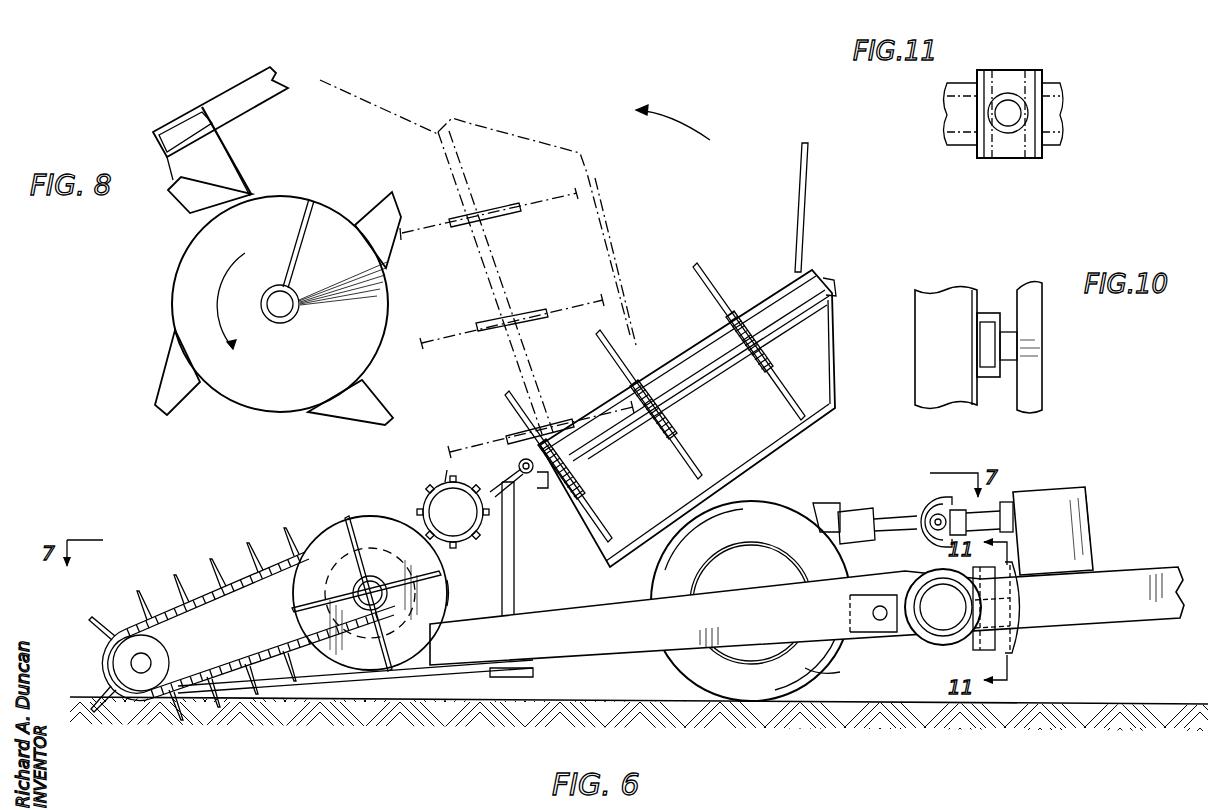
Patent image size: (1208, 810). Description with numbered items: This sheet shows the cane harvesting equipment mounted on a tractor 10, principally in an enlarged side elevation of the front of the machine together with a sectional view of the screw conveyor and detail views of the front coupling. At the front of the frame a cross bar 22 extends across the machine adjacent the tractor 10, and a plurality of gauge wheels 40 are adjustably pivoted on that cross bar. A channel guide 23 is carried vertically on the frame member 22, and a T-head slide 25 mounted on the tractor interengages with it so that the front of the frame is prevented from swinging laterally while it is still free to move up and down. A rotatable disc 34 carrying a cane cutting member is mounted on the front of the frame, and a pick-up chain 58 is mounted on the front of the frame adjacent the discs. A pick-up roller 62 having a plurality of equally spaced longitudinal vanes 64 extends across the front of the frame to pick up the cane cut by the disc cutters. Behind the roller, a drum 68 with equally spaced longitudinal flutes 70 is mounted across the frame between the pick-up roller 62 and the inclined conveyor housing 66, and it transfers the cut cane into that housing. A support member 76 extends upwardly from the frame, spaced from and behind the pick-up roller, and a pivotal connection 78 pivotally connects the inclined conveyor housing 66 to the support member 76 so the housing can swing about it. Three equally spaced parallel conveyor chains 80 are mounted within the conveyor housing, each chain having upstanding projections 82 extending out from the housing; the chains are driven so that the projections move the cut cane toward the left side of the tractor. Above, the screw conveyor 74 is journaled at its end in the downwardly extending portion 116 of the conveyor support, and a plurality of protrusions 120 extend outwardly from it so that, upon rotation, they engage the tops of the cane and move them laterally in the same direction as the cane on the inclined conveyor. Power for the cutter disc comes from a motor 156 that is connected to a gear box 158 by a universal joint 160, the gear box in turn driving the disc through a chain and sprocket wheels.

In FIG. 10, the tractor 10 is at (1056, 394).
In FIG. 6, the cross bar or shaft 22 is at (928, 638).
In FIG. 11, the cross bar or shaft 22 is at (950, 94).
In FIG. 10, the cross bar or shaft 22 is at (930, 300).
In FIG. 6, the channel guide 23 is at (1008, 640).
In FIG. 11, the channel guide 23 is at (980, 160).
In FIG. 10, the channel guide 23 is at (992, 312).
In FIG. 11, the T-head slide 25 is at (1008, 128).
In FIG. 10, the T-head slide 25 is at (1020, 343).
In FIG. 6, the rotatable disc 34 is at (530, 677).
In FIG. 6, the gauge wheel 40 is at (885, 678).
In FIG. 6, the pick-up chain 58 is at (207, 599).
In FIG. 6, the pick-up roller 62 is at (376, 574).
In FIG. 6, the longitudinal vanes 64 is at (446, 593).
In FIG. 6, the inclined conveyor housing 66 is at (598, 220).
In FIG. 6, the drum 68 is at (446, 481).
In FIG. 6, the longitudinal flutes 70 is at (428, 490).
In FIG. 8, the screw conveyor 74 is at (172, 296).
In FIG. 6, the support member 76 is at (515, 590).
In FIG. 6, the pivotal connection 78 is at (528, 476).
In FIG. 6, the conveyor chains 80 is at (766, 366).
In FIG. 6, the upstanding projections 82 is at (703, 283).
In FIG. 8, the downwardly extending portion 116 is at (238, 165).
In FIG. 8, the protrusions 120 is at (193, 393).
In FIG. 6, the motor 156 is at (1090, 497).
In FIG. 6, the gear box 158 is at (818, 503).
In FIG. 6, the universal joint 160 is at (925, 503).